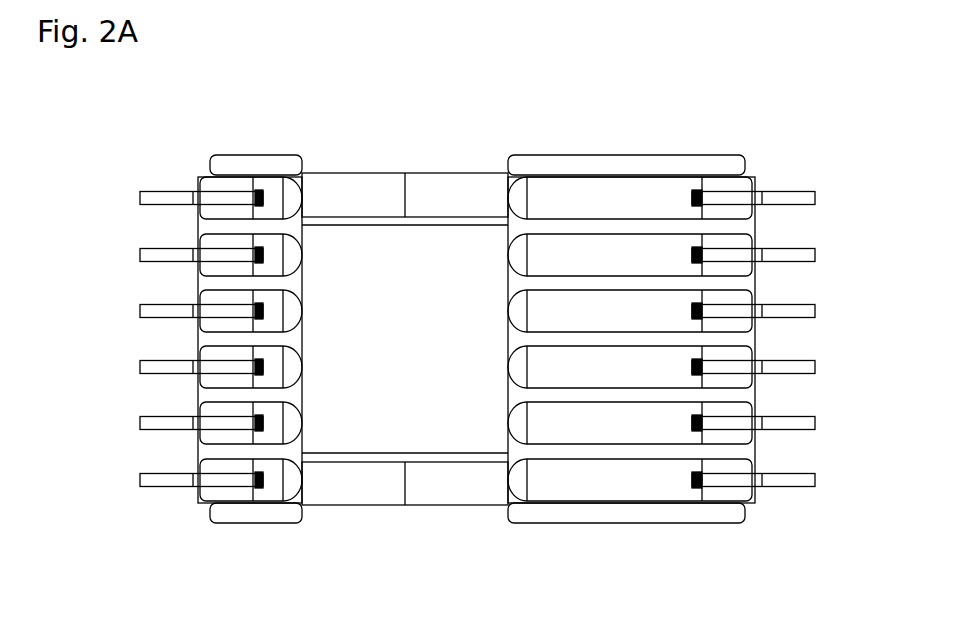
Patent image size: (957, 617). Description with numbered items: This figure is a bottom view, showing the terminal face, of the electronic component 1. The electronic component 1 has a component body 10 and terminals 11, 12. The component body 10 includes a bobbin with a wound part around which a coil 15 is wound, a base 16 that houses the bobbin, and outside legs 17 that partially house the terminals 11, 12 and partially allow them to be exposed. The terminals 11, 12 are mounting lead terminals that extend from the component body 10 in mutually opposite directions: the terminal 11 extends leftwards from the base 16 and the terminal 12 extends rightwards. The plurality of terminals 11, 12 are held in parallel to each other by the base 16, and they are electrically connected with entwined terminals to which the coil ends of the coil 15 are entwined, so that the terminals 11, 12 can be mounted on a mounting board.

The electronic component 1 is at (580, 40).
The component body 10 is at (428, 150).
The terminal 11 is at (140, 195).
The terminal 12 is at (815, 196).
The coil 15 is at (377, 430).
The base 16 is at (450, 505).
The outside legs 17 is at (265, 155).